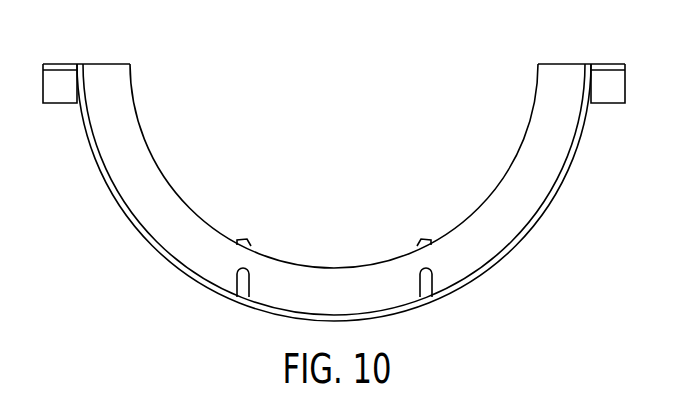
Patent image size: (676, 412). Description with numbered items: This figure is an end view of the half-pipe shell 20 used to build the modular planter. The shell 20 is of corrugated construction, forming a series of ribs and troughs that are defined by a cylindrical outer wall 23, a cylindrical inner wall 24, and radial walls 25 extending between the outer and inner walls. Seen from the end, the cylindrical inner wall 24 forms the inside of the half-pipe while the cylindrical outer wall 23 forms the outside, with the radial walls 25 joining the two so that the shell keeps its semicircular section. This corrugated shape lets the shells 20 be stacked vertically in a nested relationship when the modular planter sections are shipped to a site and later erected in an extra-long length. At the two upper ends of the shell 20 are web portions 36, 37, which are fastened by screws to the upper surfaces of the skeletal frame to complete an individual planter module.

The half-pipe shell 20 is at (288, 80).
The cylindrical outer wall 23 is at (478, 278).
The cylindrical inner wall 24 is at (512, 162).
The radial wall 25 is at (537, 196).
The web portion 36 is at (606, 63).
The web portion 37 is at (60, 63).